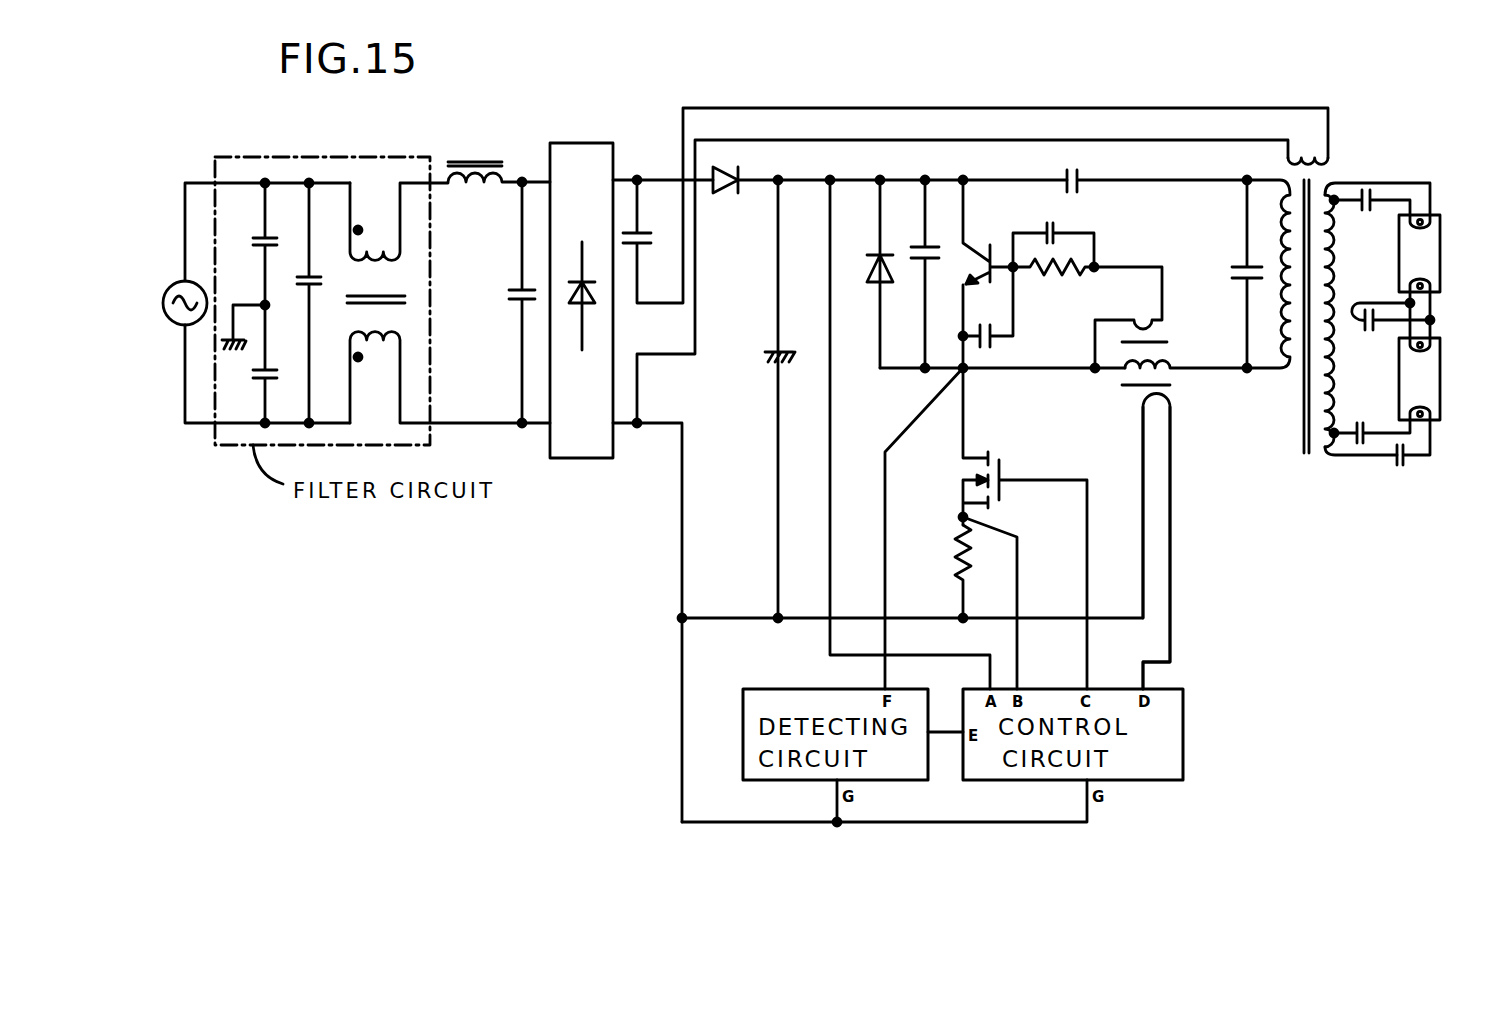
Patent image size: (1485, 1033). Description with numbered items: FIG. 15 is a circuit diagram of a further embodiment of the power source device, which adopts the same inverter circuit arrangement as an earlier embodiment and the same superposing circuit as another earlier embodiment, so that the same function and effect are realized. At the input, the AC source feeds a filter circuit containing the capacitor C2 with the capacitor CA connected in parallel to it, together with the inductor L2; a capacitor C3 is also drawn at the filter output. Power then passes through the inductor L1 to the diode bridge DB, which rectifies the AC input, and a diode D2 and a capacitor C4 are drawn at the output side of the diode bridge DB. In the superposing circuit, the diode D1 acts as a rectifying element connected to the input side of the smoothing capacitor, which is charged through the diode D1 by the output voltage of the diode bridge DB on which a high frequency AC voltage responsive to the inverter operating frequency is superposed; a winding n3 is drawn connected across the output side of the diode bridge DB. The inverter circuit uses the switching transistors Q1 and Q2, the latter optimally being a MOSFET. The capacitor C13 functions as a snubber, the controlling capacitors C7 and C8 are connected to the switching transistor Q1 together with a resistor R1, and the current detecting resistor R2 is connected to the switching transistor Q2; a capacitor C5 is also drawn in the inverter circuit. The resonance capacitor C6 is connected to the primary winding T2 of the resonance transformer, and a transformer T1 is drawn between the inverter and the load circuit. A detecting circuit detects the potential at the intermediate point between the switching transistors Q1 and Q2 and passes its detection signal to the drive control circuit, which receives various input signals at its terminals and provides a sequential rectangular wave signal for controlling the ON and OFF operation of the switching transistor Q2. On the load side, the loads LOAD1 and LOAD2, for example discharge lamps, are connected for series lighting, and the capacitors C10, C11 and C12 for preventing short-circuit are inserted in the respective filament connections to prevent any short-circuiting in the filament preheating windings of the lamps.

The capacitor CA is at (249, 266).
The controlling capacitor C8 is at (645, 345).
The capacitor C2 is at (323, 303).
The inductor L2 is at (434, 299).
The inductor L1 is at (499, 193).
The capacitor C3 is at (512, 302).
The diode bridge DB is at (558, 458).
The diode D2 is at (890, 203).
The capacitor C4 is at (1097, 399).
The diode D1 is at (895, 274).
The capacitor C13 is at (918, 242).
The switching transistor Q1 is at (988, 274).
The capacitor C5 is at (1157, 169).
The controlling capacitor C7 is at (1053, 229).
The resistor R1 is at (1053, 285).
The primary winding T2 is at (1170, 478).
The resonance capacitor C6 is at (1227, 274).
The transformer T1 is at (1338, 340).
The winding n3 is at (1333, 150).
The capacitor C12 is at (1370, 222).
The load LOAD1 is at (1442, 253).
The capacitor C11 is at (1387, 335).
The load LOAD2 is at (1442, 381).
The capacitor C10 is at (1370, 416).
The switching transistor Q2 is at (1025, 528).
The current detecting resistor R2 is at (939, 565).